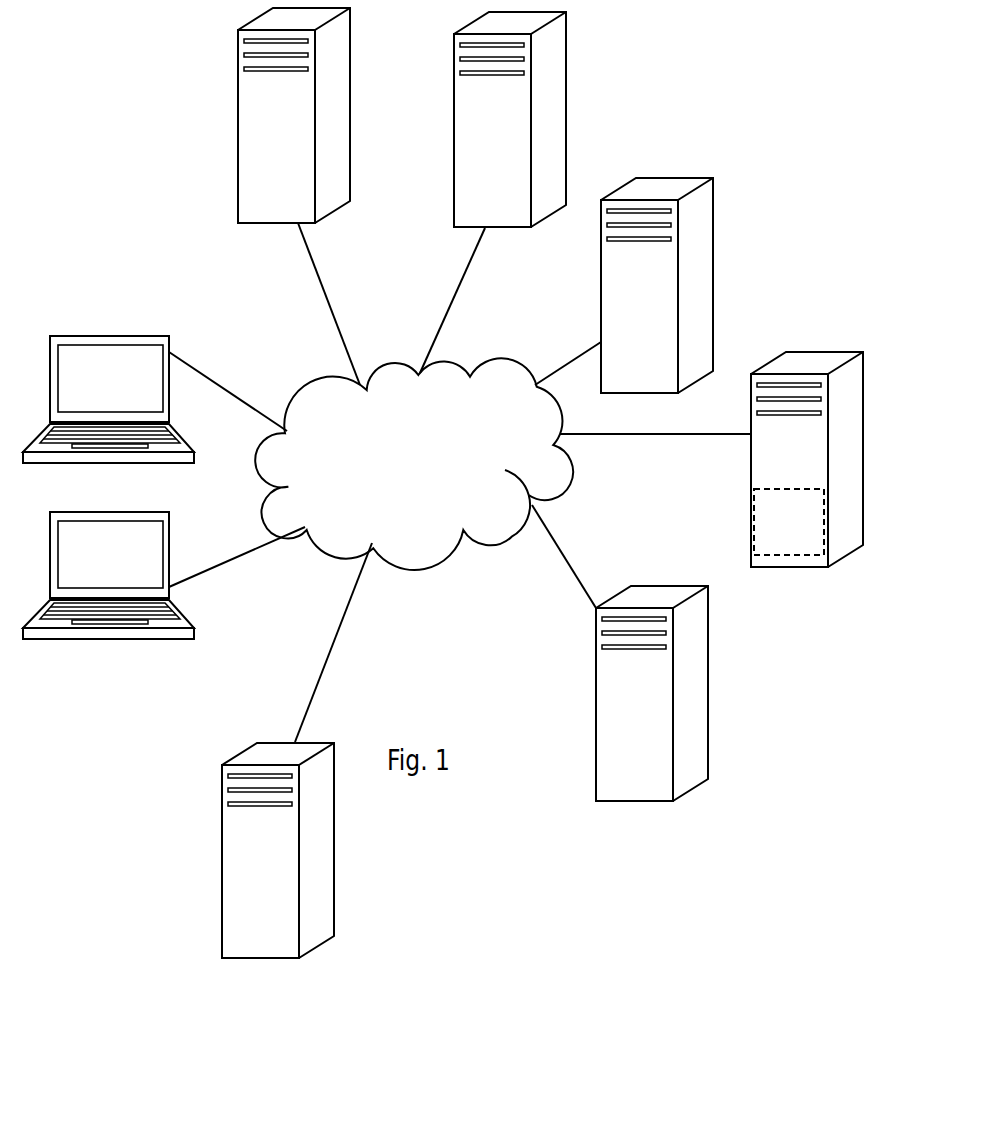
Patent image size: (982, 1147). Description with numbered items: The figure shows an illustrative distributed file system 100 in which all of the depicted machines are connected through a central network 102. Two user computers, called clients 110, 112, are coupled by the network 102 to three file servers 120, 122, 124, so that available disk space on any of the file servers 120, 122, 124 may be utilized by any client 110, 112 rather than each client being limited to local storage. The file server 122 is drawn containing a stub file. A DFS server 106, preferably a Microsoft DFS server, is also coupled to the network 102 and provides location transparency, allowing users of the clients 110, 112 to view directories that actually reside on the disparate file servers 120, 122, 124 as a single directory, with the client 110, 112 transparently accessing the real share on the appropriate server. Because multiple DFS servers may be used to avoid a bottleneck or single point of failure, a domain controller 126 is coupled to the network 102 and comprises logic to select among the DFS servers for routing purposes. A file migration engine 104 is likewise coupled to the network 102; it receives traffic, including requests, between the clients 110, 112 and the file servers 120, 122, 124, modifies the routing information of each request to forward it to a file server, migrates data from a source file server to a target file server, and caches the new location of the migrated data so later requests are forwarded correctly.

The system 100 is at (861, 66).
The network 102 is at (460, 482).
The file migration engine 104 is at (544, 119).
The DFS server 106 is at (205, 115).
The client 110 is at (108, 397).
The client 112 is at (108, 602).
The file server 120 is at (689, 285).
The file server 122 is at (743, 484).
The file server 124 is at (684, 693).
The domain controller 126 is at (143, 940).